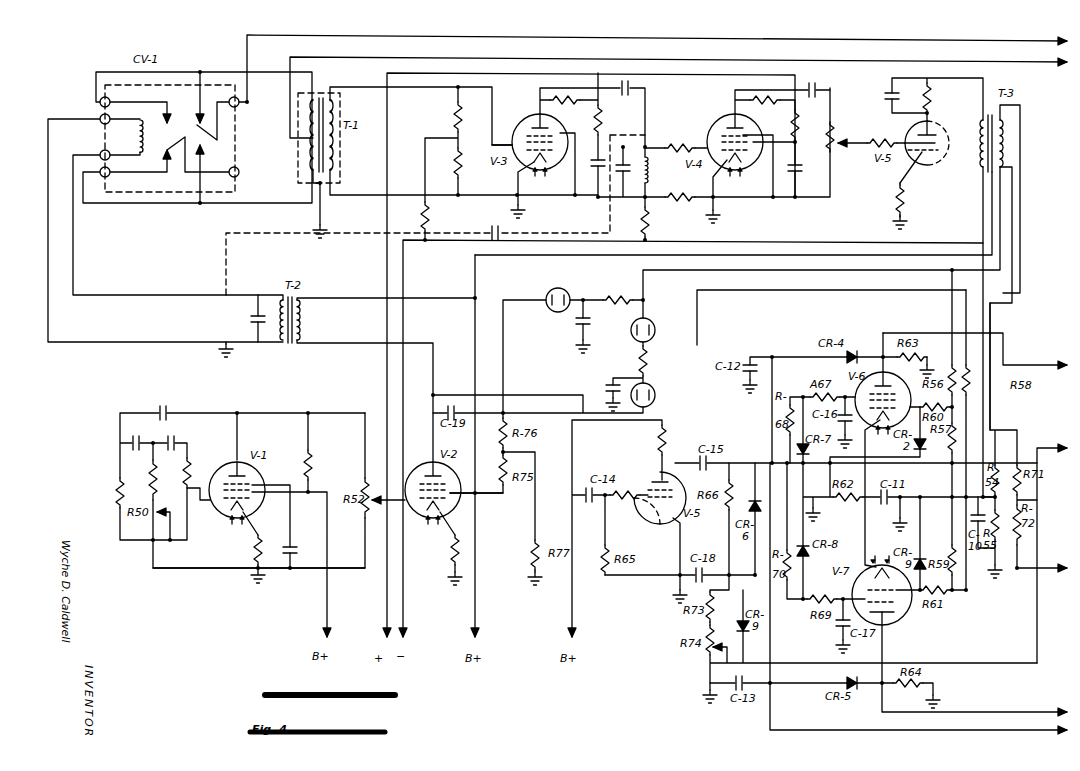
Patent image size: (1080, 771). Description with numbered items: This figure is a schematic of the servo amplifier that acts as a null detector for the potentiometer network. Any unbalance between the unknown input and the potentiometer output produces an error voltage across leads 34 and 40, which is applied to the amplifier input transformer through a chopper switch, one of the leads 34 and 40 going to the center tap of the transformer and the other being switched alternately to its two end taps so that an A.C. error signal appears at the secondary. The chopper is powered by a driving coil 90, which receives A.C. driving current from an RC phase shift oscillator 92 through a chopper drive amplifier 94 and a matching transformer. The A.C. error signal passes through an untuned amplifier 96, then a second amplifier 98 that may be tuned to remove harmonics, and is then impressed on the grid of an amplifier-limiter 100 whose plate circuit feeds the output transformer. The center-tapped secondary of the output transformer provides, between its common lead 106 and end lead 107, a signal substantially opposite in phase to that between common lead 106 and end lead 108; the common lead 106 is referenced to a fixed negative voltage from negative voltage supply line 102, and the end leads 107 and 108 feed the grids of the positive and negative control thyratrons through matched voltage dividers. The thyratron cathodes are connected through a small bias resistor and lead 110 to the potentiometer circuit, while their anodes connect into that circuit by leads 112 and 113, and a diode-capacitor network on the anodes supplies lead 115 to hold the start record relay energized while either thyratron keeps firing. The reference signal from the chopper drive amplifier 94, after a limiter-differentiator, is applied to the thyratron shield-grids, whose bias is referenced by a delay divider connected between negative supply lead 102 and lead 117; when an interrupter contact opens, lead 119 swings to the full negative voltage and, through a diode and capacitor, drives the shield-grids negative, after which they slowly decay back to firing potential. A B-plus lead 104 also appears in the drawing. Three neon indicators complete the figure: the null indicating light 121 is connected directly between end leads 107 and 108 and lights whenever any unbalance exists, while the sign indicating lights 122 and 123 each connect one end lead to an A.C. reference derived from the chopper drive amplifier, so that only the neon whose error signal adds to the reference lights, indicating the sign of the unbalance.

The lead 34 is at (1055, 41).
The lead 40 is at (1050, 63).
The driving coil 90 is at (138, 134).
The oscillator 92 is at (222, 547).
The chopper drive amplifier 94 is at (420, 535).
The untuned amplifier 96 is at (518, 109).
The second amplifier 98 is at (705, 115).
The amplifier-limiter 100 is at (903, 126).
The negative voltage supply line 102 is at (990, 412).
The B+ lead 104 is at (475, 598).
The common lead 106 is at (1012, 303).
The end lead 107 is at (992, 218).
The end lead 108 is at (1020, 255).
The lead 110 is at (1060, 455).
The lead 112 is at (927, 322).
The lead 113 is at (1044, 709).
The lead 115 is at (1042, 730).
The lead 117 is at (1058, 580).
The lead 119 is at (1037, 535).
The null indicating light 121 is at (655, 328).
The sign indicating light 122 is at (568, 291).
The sign indicating light 123 is at (655, 393).